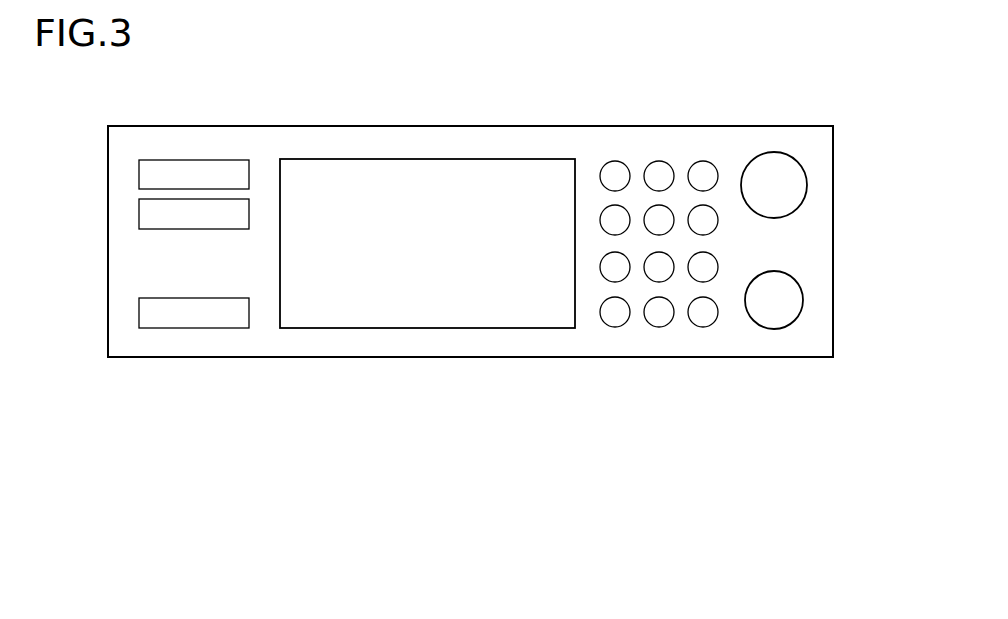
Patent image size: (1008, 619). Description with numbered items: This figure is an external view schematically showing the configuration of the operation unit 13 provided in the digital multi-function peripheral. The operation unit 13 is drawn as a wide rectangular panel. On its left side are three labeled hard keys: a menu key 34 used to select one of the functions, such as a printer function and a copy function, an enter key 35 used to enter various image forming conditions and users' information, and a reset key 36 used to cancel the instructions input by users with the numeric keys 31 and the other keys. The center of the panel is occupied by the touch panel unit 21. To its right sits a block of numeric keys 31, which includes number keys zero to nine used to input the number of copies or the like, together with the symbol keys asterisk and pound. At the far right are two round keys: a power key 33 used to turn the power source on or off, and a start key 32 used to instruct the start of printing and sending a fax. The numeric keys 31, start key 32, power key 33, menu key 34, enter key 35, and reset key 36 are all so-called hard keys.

The operation unit 13 is at (785, 126).
The touch panel unit 21 is at (535, 159).
The numeric keys 31 is at (667, 146).
The start key 32 is at (803, 300).
The power key 33 is at (807, 181).
The menu key 34 is at (139, 175).
The enter key 35 is at (139, 214).
The reset key 36 is at (139, 317).